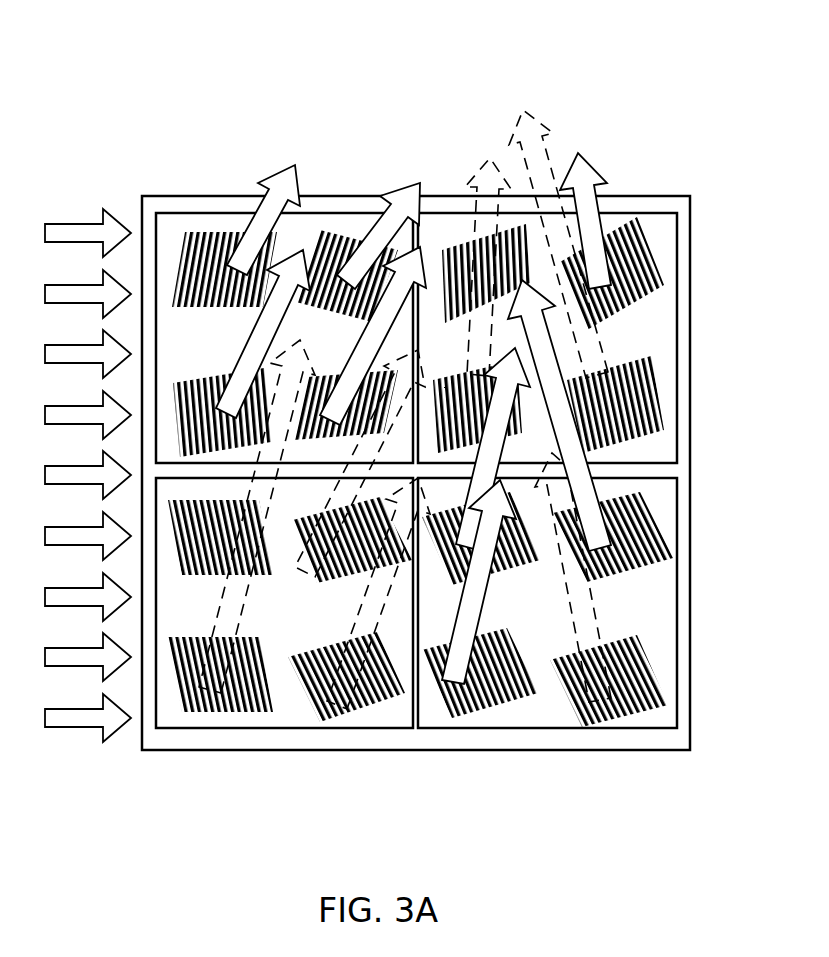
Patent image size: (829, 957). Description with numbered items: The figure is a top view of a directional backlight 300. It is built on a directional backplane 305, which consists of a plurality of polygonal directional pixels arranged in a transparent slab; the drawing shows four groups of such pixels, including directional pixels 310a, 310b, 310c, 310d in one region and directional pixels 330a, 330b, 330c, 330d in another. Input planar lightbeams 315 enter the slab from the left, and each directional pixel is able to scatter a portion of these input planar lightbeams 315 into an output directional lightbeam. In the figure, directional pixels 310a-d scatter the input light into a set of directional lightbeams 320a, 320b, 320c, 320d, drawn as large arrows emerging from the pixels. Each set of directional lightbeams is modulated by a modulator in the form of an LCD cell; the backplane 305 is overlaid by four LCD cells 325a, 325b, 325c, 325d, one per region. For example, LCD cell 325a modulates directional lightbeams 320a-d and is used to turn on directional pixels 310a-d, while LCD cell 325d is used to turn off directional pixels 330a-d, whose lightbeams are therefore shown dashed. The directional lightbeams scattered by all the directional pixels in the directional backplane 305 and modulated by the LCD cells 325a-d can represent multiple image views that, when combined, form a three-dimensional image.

The directional backlight 300 is at (390, 52).
The directional backplane 305 is at (633, 207).
The directional pixel 310a is at (190, 250).
The directional pixel 310b is at (190, 385).
The directional pixel 310c is at (347, 247).
The directional pixel 310d is at (300, 407).
The input planar lightbeams 315 is at (49, 220).
The directional lightbeam 320a is at (297, 168).
The directional lightbeam 320b is at (417, 183).
The directional lightbeam 320c is at (278, 190).
The directional lightbeam 320d is at (357, 353).
The LCD cell 325a is at (228, 222).
The LCD cell 325b is at (652, 330).
The LCD cell 325c is at (657, 510).
The LCD cell 325d is at (165, 540).
The directional pixel 330a is at (243, 572).
The directional pixel 330b is at (353, 580).
The directional pixel 330c is at (335, 663).
The directional pixel 330d is at (245, 662).